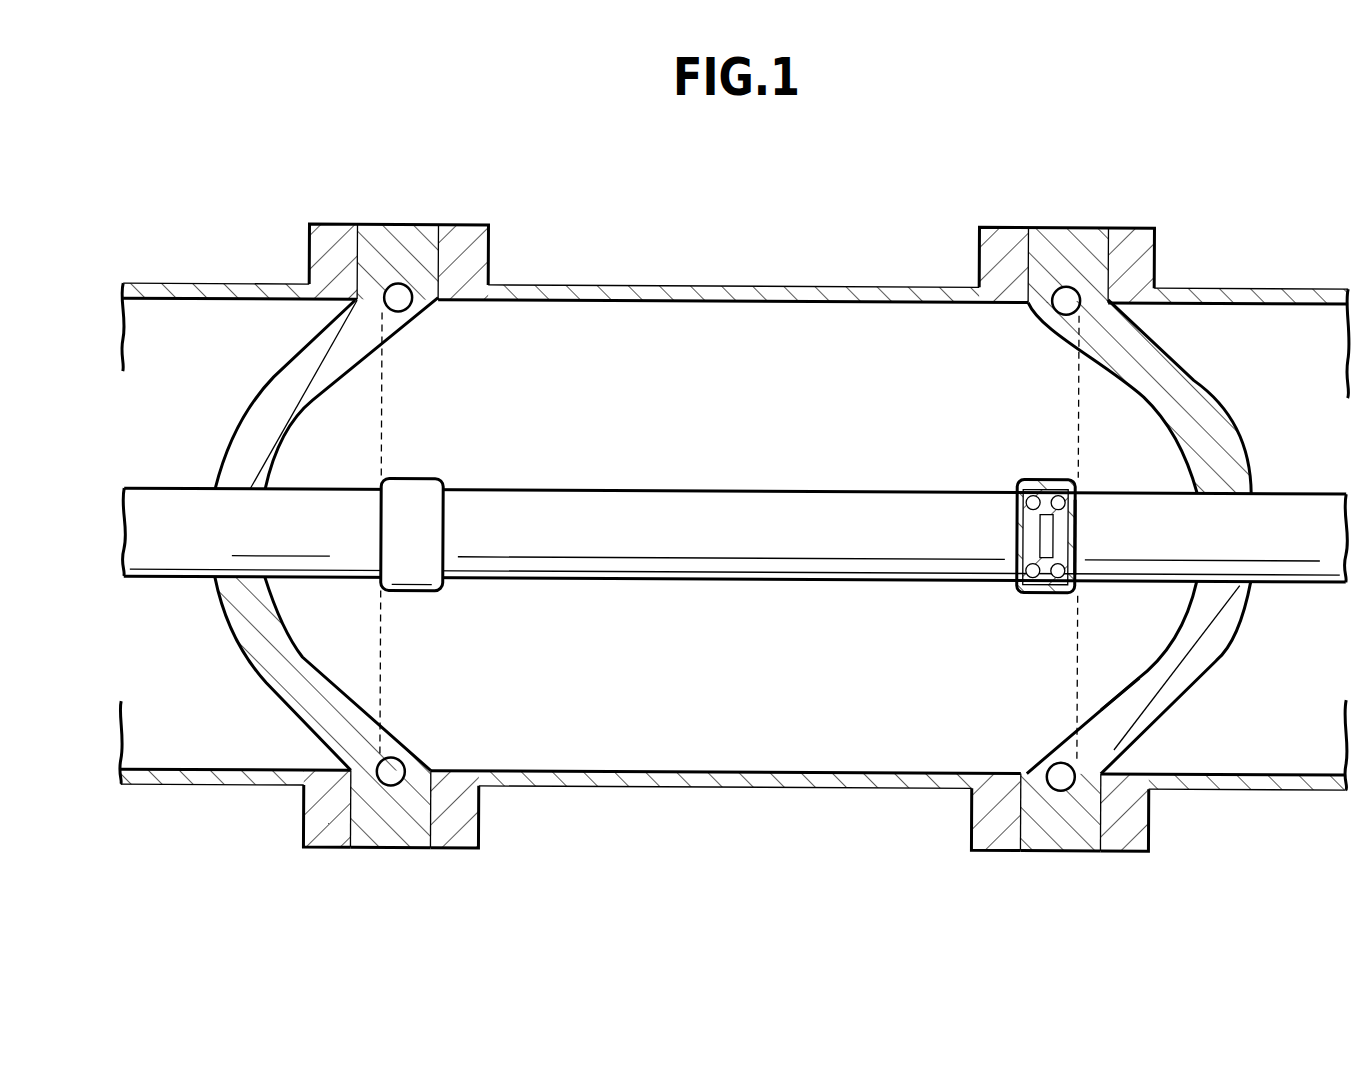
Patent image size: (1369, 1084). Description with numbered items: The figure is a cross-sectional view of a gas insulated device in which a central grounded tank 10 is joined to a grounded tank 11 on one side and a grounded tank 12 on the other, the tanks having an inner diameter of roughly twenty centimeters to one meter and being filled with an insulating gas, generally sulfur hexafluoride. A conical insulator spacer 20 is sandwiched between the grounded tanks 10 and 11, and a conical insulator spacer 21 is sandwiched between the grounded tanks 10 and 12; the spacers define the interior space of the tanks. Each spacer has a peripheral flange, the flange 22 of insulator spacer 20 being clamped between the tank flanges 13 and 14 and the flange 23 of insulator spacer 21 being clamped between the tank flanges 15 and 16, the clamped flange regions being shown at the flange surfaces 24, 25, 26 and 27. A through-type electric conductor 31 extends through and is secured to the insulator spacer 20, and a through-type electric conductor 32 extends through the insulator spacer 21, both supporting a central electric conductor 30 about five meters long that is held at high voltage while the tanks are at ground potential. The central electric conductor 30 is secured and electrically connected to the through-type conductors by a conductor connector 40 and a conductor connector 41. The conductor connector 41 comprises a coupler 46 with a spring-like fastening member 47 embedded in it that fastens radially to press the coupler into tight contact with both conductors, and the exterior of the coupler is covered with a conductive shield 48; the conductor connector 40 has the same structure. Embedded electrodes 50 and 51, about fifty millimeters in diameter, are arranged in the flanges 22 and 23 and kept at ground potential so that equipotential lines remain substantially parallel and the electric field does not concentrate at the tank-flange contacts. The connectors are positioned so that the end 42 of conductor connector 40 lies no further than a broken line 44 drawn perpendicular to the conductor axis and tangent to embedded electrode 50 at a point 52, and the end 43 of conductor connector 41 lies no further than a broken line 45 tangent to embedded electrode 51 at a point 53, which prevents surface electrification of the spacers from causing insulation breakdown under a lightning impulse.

The grounded tank 10 is at (717, 284).
The grounded tank 11 is at (205, 284).
The grounded tank 12 is at (1240, 284).
The flange of grounded tank 13 is at (318, 828).
The flange of grounded tank 14 is at (483, 833).
The flange of grounded tank 15 is at (975, 832).
The flange of grounded tank 16 is at (1143, 820).
The conical insulator spacer 20 is at (236, 424).
The conical insulator spacer 21 is at (1230, 418).
The flange of insulator spacer 22 is at (383, 835).
The flange of insulator spacer 23 is at (1060, 827).
The flange surface 24 is at (352, 845).
The sealing face 25 is at (1092, 837).
The sealing face 26 is at (423, 833).
The sealing face 27 is at (1033, 837).
The central electric conductor 30 is at (680, 489).
The through-type electric conductor 31 is at (167, 581).
The through-type electric conductor 32 is at (1308, 581).
The conductor connector 40 is at (424, 480).
The conductor connector 41 is at (1025, 546).
The end of conductor connector 42 is at (378, 590).
The end of conductor connector 43 is at (1080, 592).
The broken line 44 is at (379, 437).
The broken line 45 is at (1082, 409).
The coupler 46 is at (1012, 589).
The spring-like fastening member 47 is at (1040, 476).
The conductive shield 48 is at (1040, 592).
The embedded electrode 50 is at (400, 765).
The embedded electrode 51 is at (1058, 769).
The point on embedded electrode 52 is at (398, 757).
The point on embedded electrode 53 is at (1110, 755).